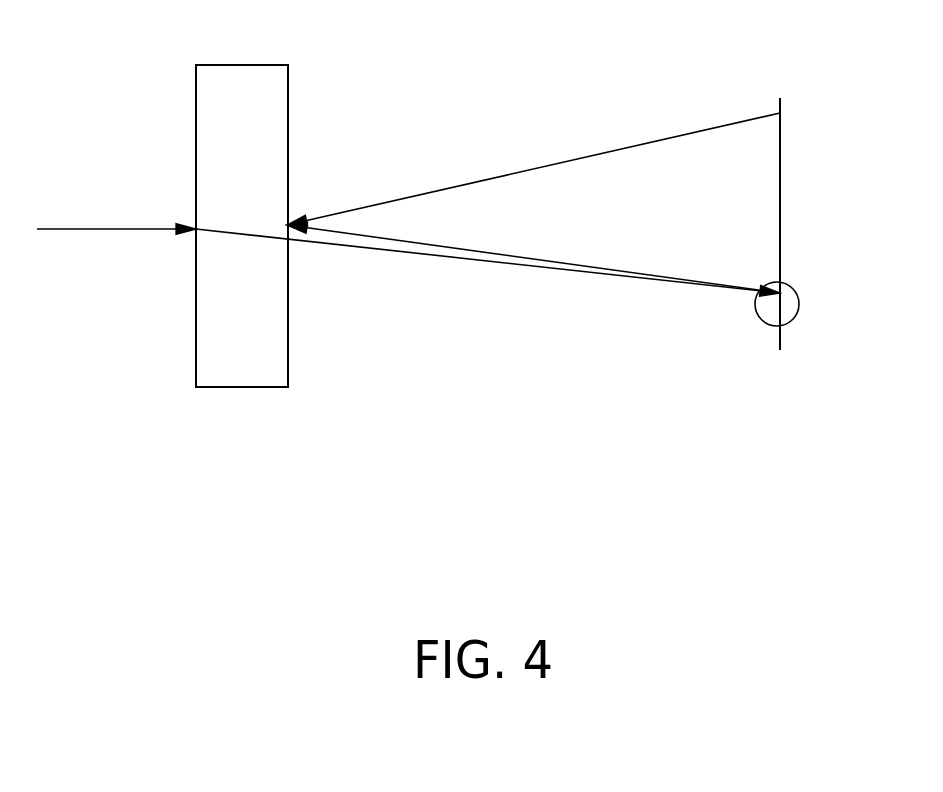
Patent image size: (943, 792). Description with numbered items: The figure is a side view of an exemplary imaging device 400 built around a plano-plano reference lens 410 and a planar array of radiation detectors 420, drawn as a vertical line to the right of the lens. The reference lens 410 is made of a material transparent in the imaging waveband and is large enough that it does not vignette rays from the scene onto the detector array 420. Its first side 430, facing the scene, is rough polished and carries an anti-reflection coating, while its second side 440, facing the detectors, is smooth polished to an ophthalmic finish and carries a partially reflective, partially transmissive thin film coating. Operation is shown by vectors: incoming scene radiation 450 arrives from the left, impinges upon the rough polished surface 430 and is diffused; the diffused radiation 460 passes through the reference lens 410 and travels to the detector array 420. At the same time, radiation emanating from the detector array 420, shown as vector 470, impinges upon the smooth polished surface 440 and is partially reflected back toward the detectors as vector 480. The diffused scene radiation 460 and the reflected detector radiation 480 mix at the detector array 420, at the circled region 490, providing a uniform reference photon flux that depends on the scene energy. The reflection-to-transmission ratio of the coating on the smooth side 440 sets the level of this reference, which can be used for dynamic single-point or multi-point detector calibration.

The imaging device 400 is at (132, 580).
The plano-plano reference lens 410 is at (240, 65).
The planar array of radiation detectors 420 is at (782, 122).
The first side of the reference lens 430 is at (185, 371).
The second side of the reference lens 440 is at (298, 371).
The incoming scene radiation vector 450 is at (87, 228).
The diffused radiation vector 460 is at (383, 250).
The detector radiation vector 470 is at (456, 186).
The reflected detector radiation vector 480 is at (489, 252).
The mixing region 490 is at (806, 328).